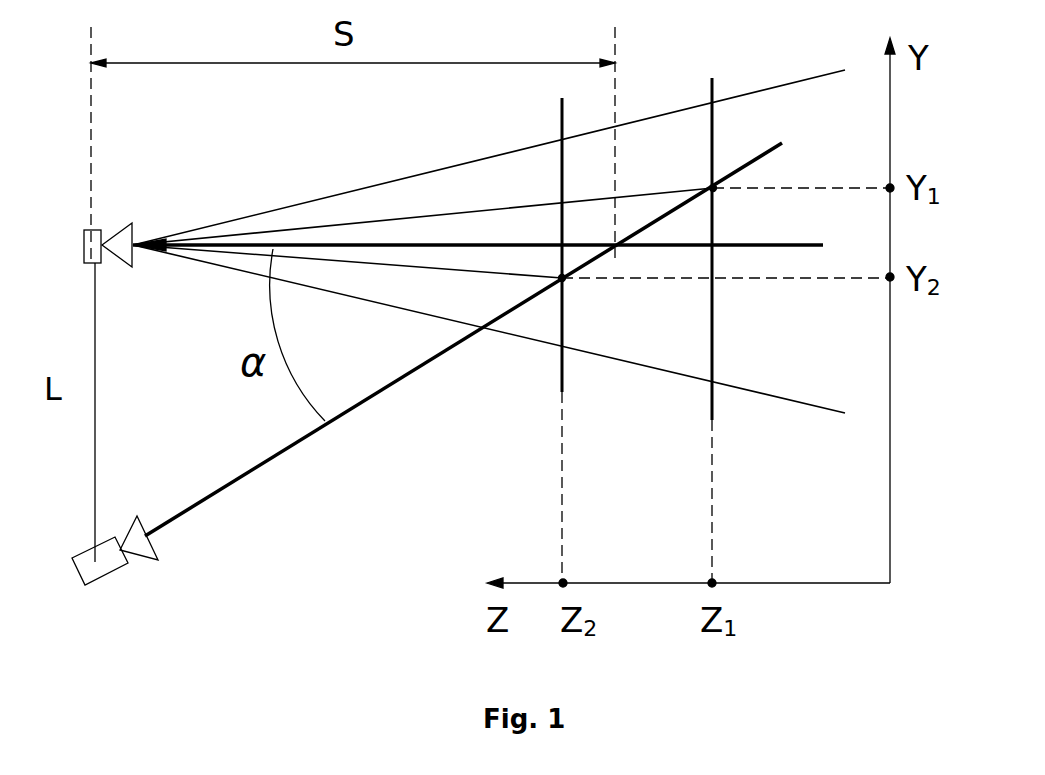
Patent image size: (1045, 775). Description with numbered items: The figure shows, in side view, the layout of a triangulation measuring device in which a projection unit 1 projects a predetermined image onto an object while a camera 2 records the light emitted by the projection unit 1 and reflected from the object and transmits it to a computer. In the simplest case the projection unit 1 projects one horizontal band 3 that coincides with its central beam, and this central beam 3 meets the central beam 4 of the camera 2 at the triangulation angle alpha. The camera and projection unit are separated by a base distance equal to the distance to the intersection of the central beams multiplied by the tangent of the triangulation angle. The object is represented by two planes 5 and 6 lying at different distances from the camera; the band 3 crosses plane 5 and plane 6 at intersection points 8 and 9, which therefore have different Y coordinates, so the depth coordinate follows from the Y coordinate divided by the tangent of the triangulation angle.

The projection unit 1 is at (93, 586).
The camera 2 is at (88, 232).
The central beam of the projection unit (horizontal band) 3 is at (780, 146).
The central beam of camera 4 is at (782, 248).
The plane 5 is at (560, 365).
The plane 6 is at (712, 405).
The intersection point 8 is at (568, 283).
The intersection point 9 is at (708, 185).